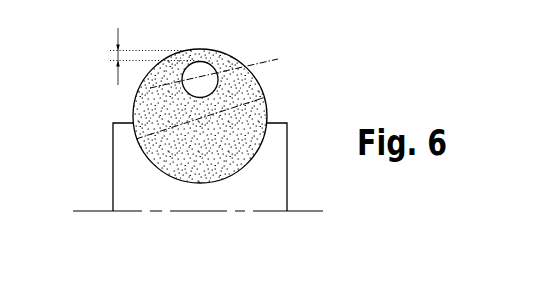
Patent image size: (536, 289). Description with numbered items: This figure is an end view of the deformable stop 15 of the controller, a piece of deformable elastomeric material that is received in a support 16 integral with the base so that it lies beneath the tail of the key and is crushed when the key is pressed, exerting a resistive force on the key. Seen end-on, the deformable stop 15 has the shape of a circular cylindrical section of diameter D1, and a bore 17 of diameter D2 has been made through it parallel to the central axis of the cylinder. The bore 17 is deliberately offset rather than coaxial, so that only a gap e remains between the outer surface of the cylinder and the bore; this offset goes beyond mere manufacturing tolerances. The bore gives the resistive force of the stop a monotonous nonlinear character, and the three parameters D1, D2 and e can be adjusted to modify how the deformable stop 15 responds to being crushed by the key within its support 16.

The deformable stop 15 is at (237, 86).
The bore 17 is at (191, 93).
The support 16 is at (253, 186).
The diameter of the circular cylindrical section D1 is at (207, 103).
The diameter of the bore D2 is at (200, 77).
The gap e is at (144, 56).